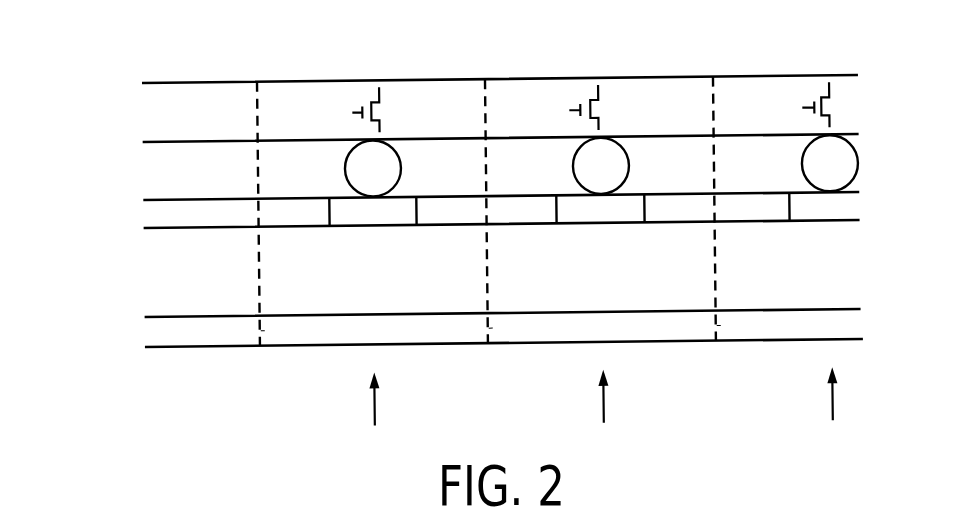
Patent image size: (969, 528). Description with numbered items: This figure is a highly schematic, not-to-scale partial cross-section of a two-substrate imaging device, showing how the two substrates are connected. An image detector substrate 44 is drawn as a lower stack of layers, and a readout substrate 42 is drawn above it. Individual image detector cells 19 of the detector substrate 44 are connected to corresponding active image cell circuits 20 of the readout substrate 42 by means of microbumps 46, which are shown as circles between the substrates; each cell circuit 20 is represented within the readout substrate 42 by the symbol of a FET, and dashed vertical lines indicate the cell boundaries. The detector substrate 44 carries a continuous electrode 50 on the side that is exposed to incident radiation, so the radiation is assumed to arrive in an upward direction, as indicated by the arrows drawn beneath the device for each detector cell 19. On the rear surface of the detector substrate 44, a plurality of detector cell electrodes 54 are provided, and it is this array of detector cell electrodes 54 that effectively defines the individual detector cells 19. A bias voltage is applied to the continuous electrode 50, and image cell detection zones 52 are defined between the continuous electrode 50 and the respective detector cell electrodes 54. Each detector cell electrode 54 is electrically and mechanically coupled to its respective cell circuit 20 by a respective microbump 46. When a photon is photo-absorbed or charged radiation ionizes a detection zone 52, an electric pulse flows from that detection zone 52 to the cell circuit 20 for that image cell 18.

The image cell 18 is at (368, 82).
The image detector cell 19 is at (428, 345).
The active image cell circuit 20 is at (277, 96).
The readout substrate 42 is at (134, 104).
The image detector substrate 44 is at (128, 200).
The microbump 46 is at (134, 158).
The continuous electrode 50 is at (848, 326).
The image cell detection zone 52 is at (291, 302).
The detector cell electrode 54 is at (364, 214).